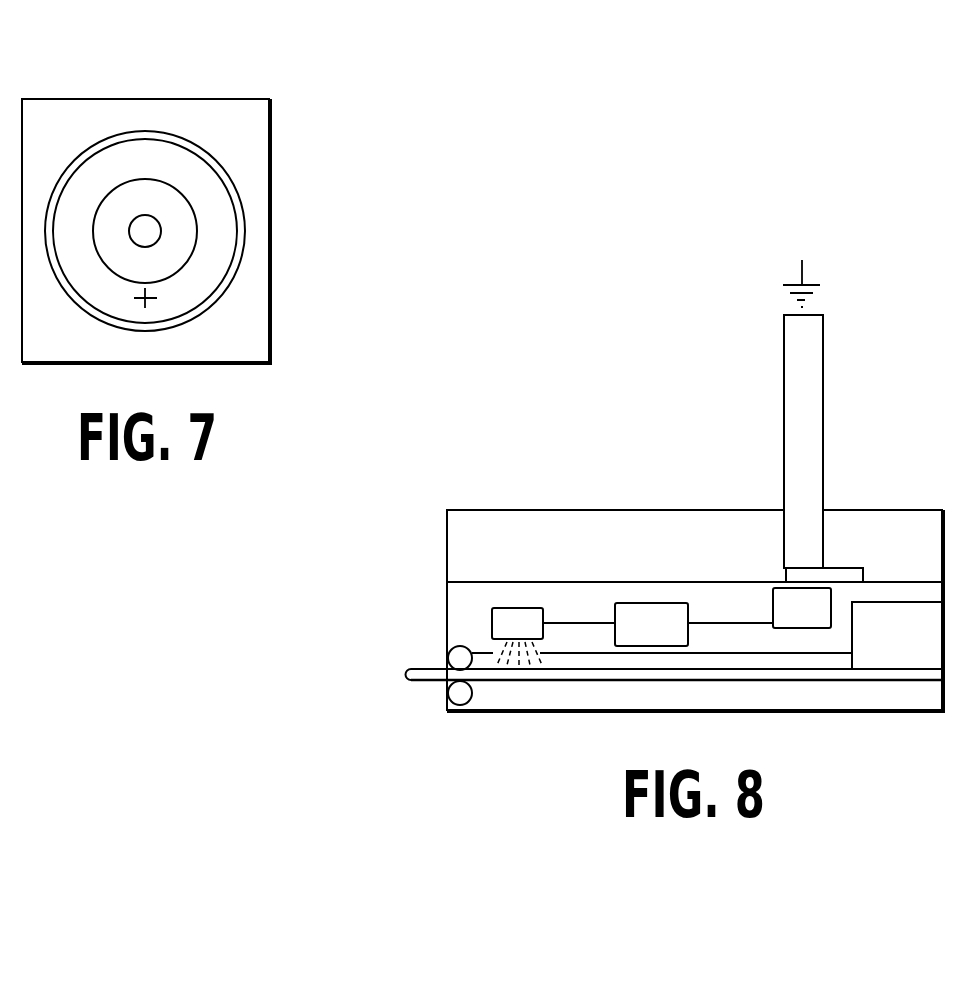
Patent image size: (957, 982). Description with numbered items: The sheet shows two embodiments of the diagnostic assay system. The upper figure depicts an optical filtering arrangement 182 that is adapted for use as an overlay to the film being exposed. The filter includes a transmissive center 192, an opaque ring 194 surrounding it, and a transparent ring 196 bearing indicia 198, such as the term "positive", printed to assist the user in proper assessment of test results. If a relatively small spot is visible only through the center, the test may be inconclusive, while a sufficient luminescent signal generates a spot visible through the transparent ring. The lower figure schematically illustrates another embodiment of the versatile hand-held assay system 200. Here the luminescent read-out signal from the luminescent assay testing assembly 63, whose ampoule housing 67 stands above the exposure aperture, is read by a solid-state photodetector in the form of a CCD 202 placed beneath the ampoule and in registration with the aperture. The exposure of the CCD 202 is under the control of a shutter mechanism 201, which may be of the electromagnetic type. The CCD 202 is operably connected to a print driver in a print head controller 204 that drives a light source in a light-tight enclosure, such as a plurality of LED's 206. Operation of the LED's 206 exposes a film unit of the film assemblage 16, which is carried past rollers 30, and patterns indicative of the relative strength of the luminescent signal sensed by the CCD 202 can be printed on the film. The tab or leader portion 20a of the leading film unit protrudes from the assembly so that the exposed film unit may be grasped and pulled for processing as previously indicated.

In FIG. 7, the optical filtering arrangement 182 is at (205, 70).
In FIG. 7, the transmissive center 192 is at (152, 237).
In FIG. 7, the opaque ring 194 is at (185, 227).
In FIG. 7, the transparent ring 196 is at (202, 175).
In FIG. 7, the indicia 198 is at (200, 190).
In FIG. 8, the hand-held assay system 200 is at (540, 441).
In FIG. 8, the luminescent assay testing assembly 63 is at (852, 375).
In FIG. 8, the housing 67 is at (773, 437).
In FIG. 8, the shutter mechanism 201 is at (852, 568).
In FIG. 8, the CCD 202 is at (772, 607).
In FIG. 8, the print head controller 204 is at (652, 603).
In FIG. 8, the LED's 206 is at (522, 607).
In FIG. 8, the roller 30 is at (453, 645).
In FIG. 8, the tab or leader portion 20a is at (422, 670).
In FIG. 8, the film assemblage 16 is at (690, 694).